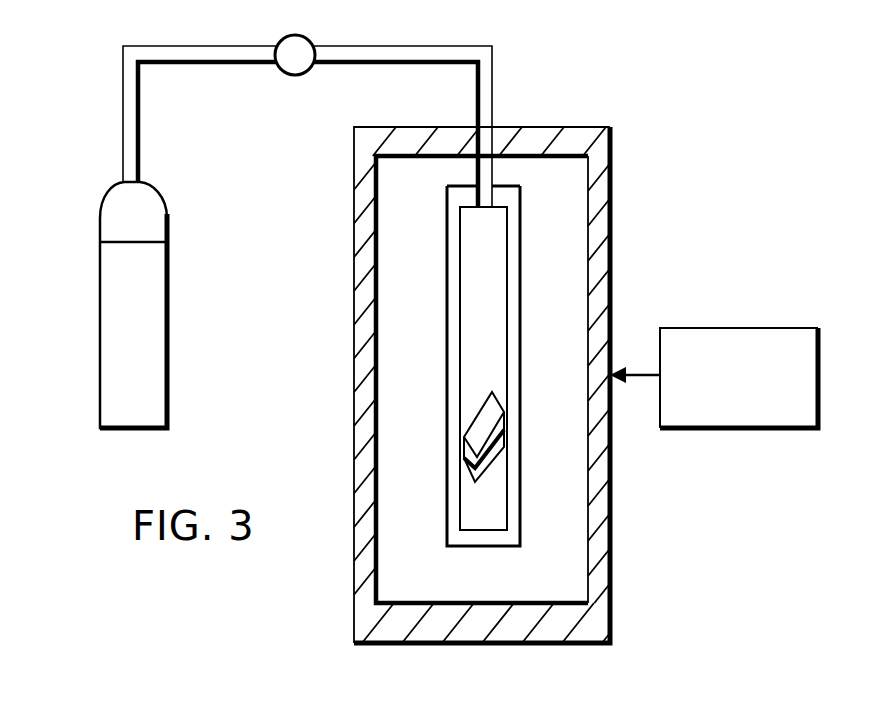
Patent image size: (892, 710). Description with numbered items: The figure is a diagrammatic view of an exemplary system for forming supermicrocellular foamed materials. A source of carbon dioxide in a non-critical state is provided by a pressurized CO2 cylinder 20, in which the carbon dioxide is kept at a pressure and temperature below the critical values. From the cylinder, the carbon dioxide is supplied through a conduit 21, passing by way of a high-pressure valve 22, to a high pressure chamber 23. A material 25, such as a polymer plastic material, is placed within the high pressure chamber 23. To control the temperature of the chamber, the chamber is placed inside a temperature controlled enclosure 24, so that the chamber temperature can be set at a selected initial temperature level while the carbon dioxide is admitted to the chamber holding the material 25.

The pressurized CO2 cylinder 20 is at (107, 298).
The conduit 21 is at (188, 66).
The high-pressure valve 22 is at (276, 86).
The high pressure chamber 23 is at (534, 266).
The temperature controlled enclosure 24 is at (612, 196).
The material 25 is at (472, 384).